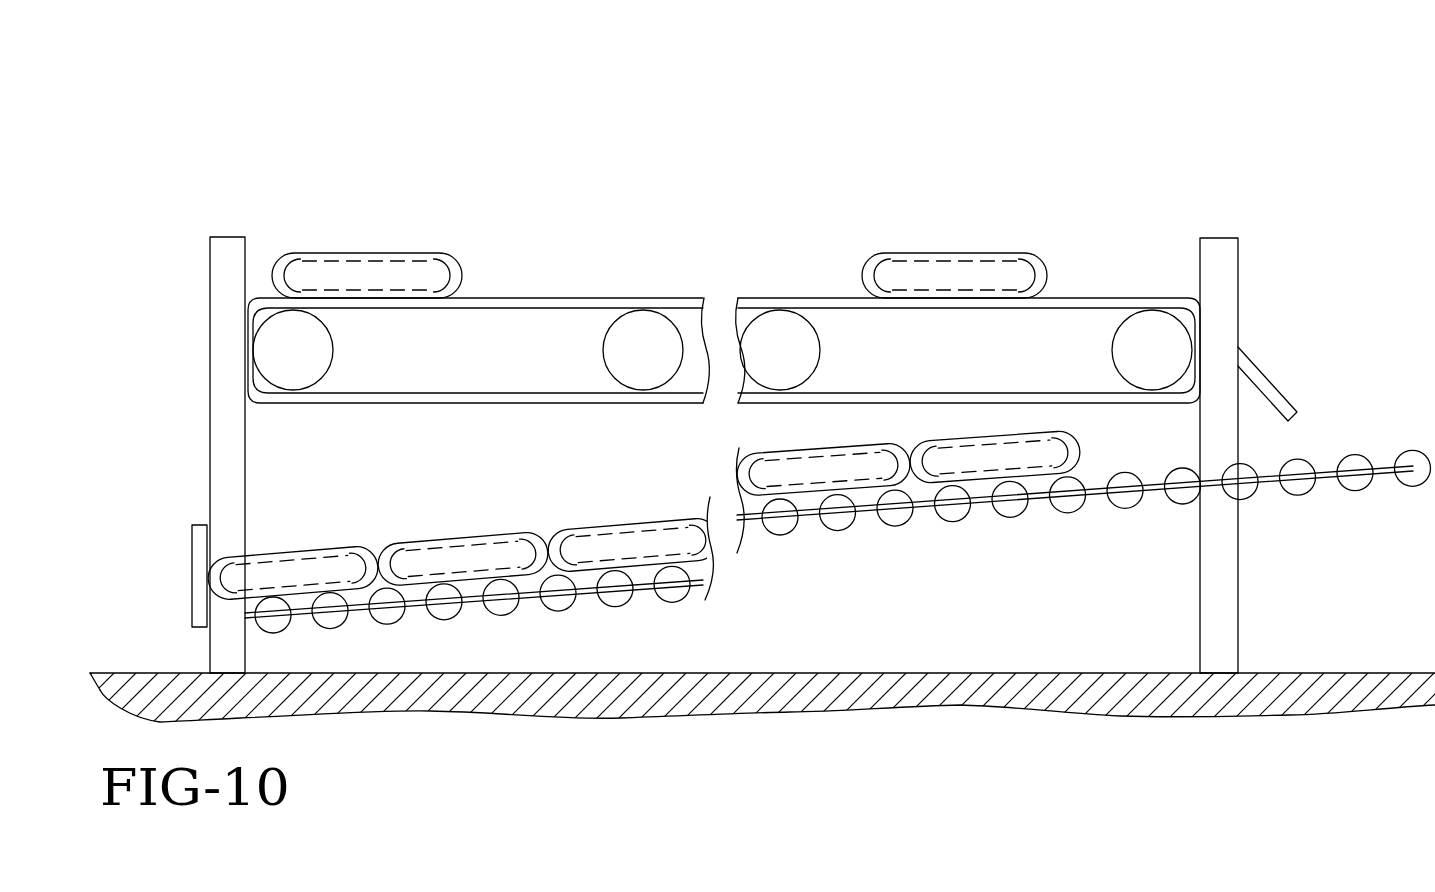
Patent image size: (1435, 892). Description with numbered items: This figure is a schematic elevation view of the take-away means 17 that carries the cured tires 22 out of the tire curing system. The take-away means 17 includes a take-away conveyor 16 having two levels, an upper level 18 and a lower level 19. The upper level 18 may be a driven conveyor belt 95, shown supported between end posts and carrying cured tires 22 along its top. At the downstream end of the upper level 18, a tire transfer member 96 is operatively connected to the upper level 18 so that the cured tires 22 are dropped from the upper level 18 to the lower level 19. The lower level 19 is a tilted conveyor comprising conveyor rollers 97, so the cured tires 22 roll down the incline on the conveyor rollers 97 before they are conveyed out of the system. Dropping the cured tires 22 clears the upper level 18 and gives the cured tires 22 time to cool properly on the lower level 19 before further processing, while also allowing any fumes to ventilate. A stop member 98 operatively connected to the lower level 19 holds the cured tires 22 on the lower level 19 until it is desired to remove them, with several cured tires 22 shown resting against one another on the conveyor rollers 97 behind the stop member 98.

The take-away conveyor 16 is at (493, 207).
The take-away means 17 is at (810, 140).
The upper level 18 is at (461, 363).
The lower level 19 is at (537, 617).
The cured tires 22 is at (644, 427).
The driven conveyor belt 95 is at (563, 298).
The tire transfer member 96 is at (1268, 383).
The conveyor rollers 97 is at (627, 603).
The stop member 98 is at (193, 588).